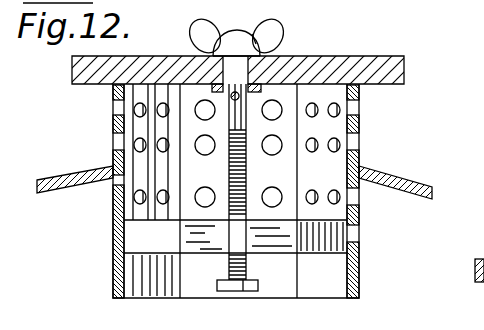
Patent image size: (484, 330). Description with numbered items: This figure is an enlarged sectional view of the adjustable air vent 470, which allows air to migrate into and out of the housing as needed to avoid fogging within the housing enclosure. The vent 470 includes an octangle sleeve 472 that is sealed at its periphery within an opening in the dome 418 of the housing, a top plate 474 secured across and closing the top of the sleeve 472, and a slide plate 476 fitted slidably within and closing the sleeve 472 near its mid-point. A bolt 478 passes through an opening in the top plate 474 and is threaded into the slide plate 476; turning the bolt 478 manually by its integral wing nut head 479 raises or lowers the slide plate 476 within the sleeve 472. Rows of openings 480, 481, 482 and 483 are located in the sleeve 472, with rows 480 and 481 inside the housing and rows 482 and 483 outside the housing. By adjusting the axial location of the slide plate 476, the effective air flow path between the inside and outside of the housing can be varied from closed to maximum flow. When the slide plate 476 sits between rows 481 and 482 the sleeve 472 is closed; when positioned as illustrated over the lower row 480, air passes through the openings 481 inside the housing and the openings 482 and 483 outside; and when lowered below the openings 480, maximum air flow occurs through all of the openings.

The adjustable air vent 470 is at (405, 53).
The plate 474 is at (367, 57).
The wing nut head 479 is at (270, 31).
The bolt 478 is at (227, 206).
The octangle sleeve 472 is at (113, 123).
The row of openings 483 is at (359, 108).
The row of openings 482 is at (359, 142).
The row of openings 481 is at (359, 198).
The row of openings 480 is at (360, 233).
The dome 418 is at (408, 174).
The plate 476 is at (147, 252).